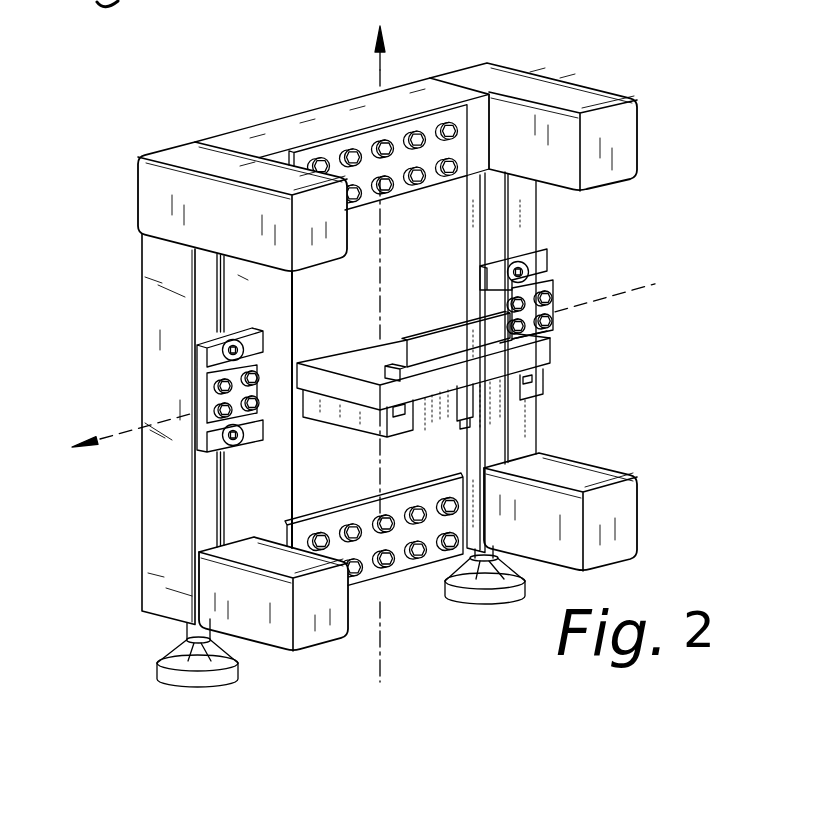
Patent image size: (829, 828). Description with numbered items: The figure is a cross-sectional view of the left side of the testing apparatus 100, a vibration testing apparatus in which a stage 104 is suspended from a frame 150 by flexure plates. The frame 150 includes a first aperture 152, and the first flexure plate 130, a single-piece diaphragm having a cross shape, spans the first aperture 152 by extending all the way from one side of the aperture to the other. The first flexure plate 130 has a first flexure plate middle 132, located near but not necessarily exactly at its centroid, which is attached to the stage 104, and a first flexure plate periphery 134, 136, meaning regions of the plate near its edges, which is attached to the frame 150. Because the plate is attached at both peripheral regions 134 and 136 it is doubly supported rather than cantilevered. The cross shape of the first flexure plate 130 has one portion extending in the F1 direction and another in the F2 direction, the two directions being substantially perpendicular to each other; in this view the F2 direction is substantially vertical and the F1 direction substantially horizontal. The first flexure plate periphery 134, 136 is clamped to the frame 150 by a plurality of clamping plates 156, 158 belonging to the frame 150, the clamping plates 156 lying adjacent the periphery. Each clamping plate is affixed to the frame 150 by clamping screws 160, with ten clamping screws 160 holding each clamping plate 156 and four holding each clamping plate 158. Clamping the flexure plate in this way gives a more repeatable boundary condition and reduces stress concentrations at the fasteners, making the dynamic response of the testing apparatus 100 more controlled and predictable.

The testing apparatus 100 is at (314, 60).
The stage 104 is at (537, 356).
The first flexure plate 130 is at (356, 331).
The first flexure plate middle 132 is at (395, 327).
The first flexure plate periphery 134 is at (393, 211).
The first flexure plate periphery 136 is at (393, 490).
The frame 150 is at (628, 142).
The first aperture 152 is at (290, 274).
The clamping plate 156 is at (430, 122).
The clamping plate 158 is at (548, 270).
The clamping screw 160 is at (352, 156).